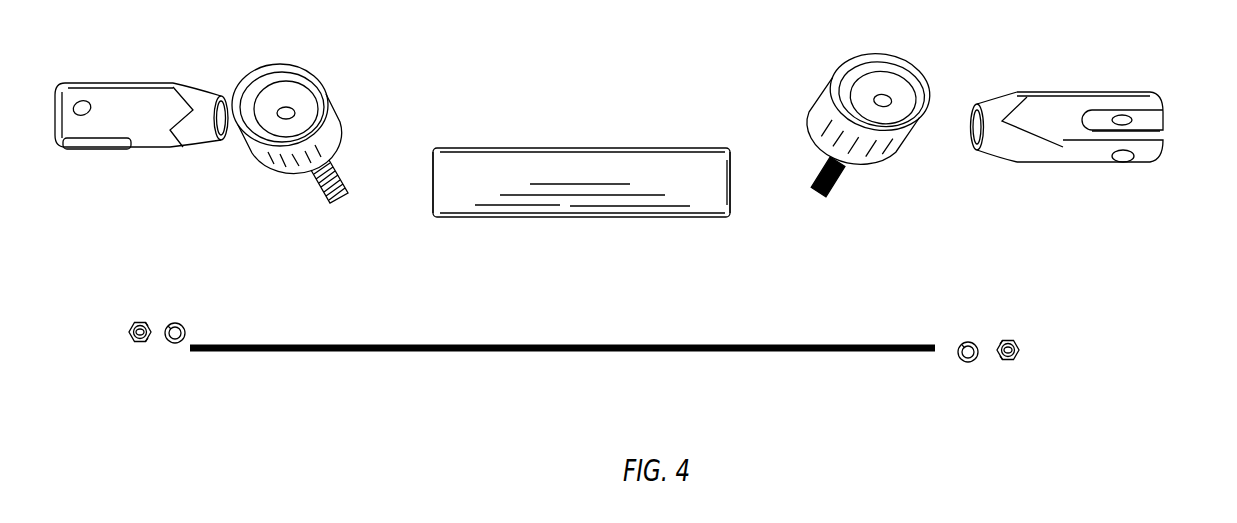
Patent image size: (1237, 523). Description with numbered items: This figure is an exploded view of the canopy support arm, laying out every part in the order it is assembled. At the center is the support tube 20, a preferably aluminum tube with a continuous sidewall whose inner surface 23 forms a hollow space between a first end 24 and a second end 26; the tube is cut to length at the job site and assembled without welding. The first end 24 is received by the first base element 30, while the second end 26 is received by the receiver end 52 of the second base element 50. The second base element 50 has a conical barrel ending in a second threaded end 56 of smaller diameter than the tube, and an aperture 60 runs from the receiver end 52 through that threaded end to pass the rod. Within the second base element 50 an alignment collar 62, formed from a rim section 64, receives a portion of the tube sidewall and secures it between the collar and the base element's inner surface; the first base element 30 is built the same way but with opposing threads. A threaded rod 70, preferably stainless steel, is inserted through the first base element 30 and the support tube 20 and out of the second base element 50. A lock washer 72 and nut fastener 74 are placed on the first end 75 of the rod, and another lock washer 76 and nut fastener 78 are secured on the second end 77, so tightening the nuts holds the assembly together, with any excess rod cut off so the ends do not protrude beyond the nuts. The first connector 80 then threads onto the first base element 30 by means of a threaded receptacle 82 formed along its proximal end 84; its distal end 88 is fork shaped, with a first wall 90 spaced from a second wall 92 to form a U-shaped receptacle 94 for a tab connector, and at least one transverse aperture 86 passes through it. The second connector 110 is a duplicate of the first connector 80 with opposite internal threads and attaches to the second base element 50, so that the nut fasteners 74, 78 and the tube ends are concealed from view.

The second connector 110 is at (121, 63).
The rim section 64 is at (242, 68).
The alignment collar 62 is at (282, 97).
The aperture 60 is at (307, 98).
The second base element 50 is at (289, 124).
The receiver end 52 is at (245, 172).
The second threaded end 56 is at (326, 196).
The support tube 20 is at (615, 169).
The second end 26 is at (452, 135).
The first end 24 is at (733, 131).
The inner surface 23 is at (745, 199).
The first base element 30 is at (928, 50).
The first connector 80 is at (1074, 127).
The threaded receptacle 82 is at (972, 142).
The proximal end 84 is at (1010, 90).
The distal end 88 is at (1160, 97).
The first wall 90 is at (1160, 120).
The U-shaped receptacle 94 is at (1160, 128).
The second wall 92 is at (1162, 150).
The aperture 86 is at (1123, 160).
The threaded rod 70 is at (562, 342).
The second end 77 is at (195, 352).
The first end 75 is at (918, 343).
The nut fastener 78 is at (138, 320).
The lock washer 76 is at (181, 322).
The lock washer 72 is at (971, 341).
The nut fastener 74 is at (1016, 340).